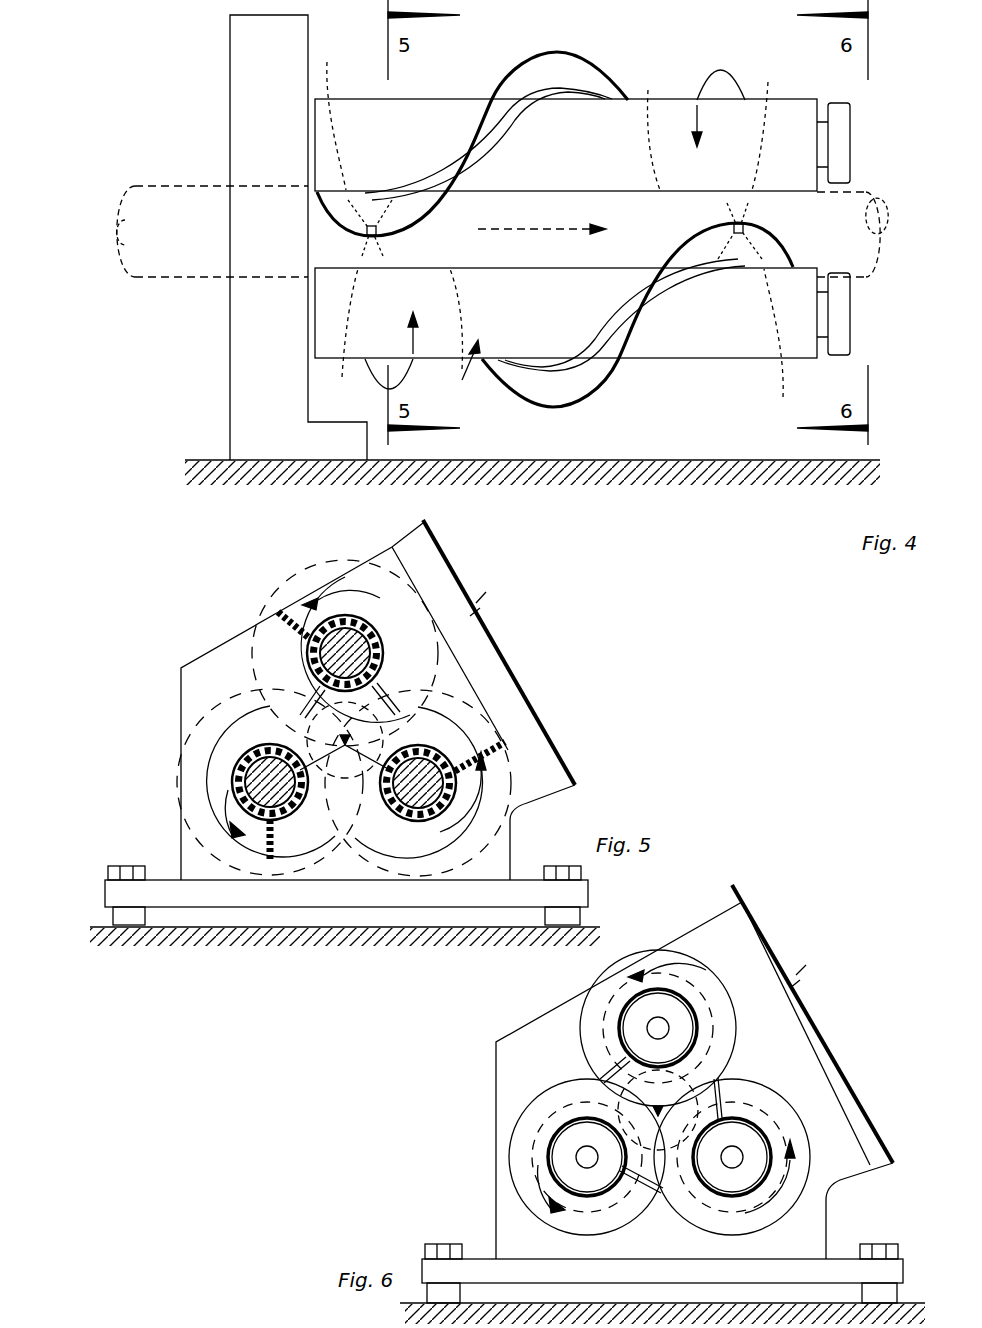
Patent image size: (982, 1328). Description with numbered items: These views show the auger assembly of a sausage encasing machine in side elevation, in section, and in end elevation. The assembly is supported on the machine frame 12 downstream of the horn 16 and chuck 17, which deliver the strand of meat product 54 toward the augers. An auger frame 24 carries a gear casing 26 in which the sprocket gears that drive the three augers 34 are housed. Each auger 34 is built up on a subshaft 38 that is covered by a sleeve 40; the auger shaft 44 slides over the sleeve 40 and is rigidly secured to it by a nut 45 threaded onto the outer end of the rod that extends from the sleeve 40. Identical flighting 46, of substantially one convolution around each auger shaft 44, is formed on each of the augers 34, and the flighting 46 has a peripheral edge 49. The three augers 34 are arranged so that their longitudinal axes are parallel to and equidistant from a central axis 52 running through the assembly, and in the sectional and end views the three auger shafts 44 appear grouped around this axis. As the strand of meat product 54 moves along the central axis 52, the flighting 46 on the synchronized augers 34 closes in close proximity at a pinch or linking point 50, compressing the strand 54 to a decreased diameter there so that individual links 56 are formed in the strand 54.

In FIG. 4, the frame 12 is at (750, 460).
In FIG. 4, the horn 16 is at (165, 187).
In FIG. 5, the chuck 17 is at (300, 642).
In FIG. 4, the auger frame 24 is at (228, 112).
In FIG. 5, the auger frame 24 is at (178, 858).
In FIG. 6, the auger frame 24 is at (487, 1248).
In FIG. 4, the gear casing 26 is at (240, 97).
In FIG. 5, the gear casing 26 is at (190, 702).
In FIG. 6, the gear casing 26 is at (505, 1073).
In FIG. 4, the augers 34 is at (624, 55).
In FIG. 5, the augers 34 is at (286, 586).
In FIG. 6, the augers 34 is at (563, 995).
In FIG. 5, the subshaft 38 is at (245, 787).
In FIG. 5, the sleeve 40 is at (232, 768).
In FIG. 4, the auger shaft 44 is at (643, 103).
In FIG. 5, the auger shaft 44 is at (320, 585).
In FIG. 6, the auger shaft 44 is at (600, 985).
In FIG. 4, the nut 45 is at (838, 123).
In FIG. 6, the nut 45 is at (700, 995).
In FIG. 4, the flighting 46 is at (580, 70).
In FIG. 5, the flighting 46 is at (333, 553).
In FIG. 6, the flighting 46 is at (680, 960).
In FIG. 4, the peripheral edge 49 is at (555, 50).
In FIG. 5, the peripheral edge 49 is at (280, 615).
In FIG. 6, the peripheral edge 49 is at (520, 1027).
In FIG. 4, the linking point 50 is at (335, 58).
In FIG. 5, the linking point 50 is at (475, 668).
In FIG. 6, the linking point 50 is at (790, 1047).
In FIG. 4, the central axis 52 is at (522, 232).
In FIG. 4, the strand of meat product 54 is at (372, 224).
In FIG. 4, the links 56 is at (648, 90).
In FIG. 6, the links 56 is at (560, 1012).